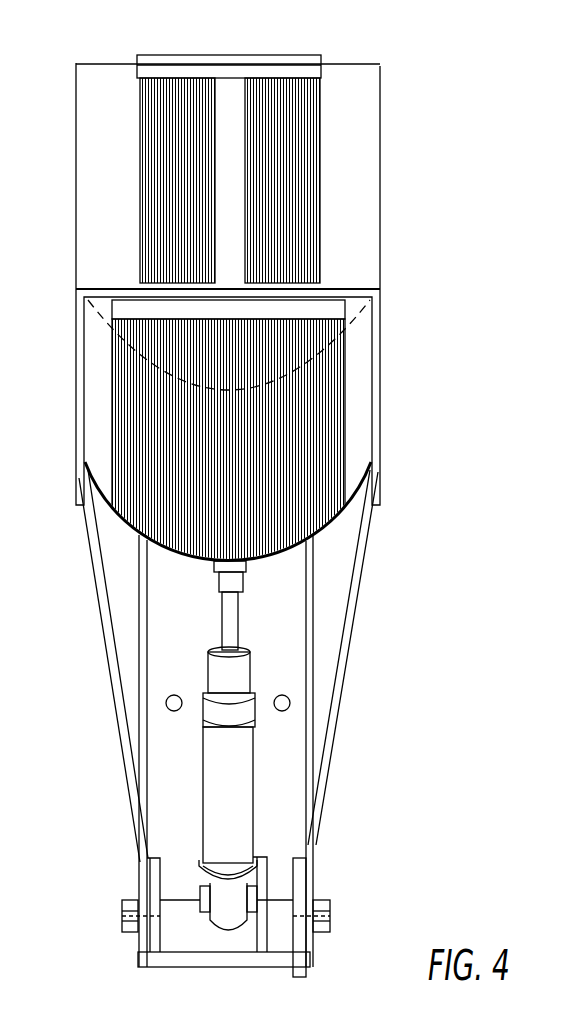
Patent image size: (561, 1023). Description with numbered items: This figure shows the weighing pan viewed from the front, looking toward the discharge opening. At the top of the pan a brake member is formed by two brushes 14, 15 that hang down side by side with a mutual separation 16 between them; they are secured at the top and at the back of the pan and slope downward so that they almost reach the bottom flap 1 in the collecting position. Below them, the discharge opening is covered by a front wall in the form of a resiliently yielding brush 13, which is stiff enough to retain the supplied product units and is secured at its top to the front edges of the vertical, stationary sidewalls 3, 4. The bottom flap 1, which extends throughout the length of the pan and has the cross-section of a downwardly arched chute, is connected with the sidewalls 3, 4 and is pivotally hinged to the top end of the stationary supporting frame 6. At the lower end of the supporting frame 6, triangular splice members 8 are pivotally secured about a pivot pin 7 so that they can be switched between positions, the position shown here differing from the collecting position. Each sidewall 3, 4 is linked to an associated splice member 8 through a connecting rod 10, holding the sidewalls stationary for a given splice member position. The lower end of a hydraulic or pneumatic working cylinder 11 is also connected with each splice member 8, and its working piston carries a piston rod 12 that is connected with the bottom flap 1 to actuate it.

The bottom flap 1 is at (312, 515).
The sidewall 3 is at (82, 238).
The sidewall 4 is at (368, 252).
The supporting frame 6 is at (309, 600).
The pivot pin 7 is at (318, 912).
The splice member 8 is at (298, 875).
The connecting rod 10 is at (340, 652).
The working cylinder 11 is at (251, 745).
The piston rod 12 is at (230, 618).
The brush 13 is at (335, 440).
The brush 14 is at (157, 145).
The brush 15 is at (303, 200).
The separation 16 is at (233, 148).